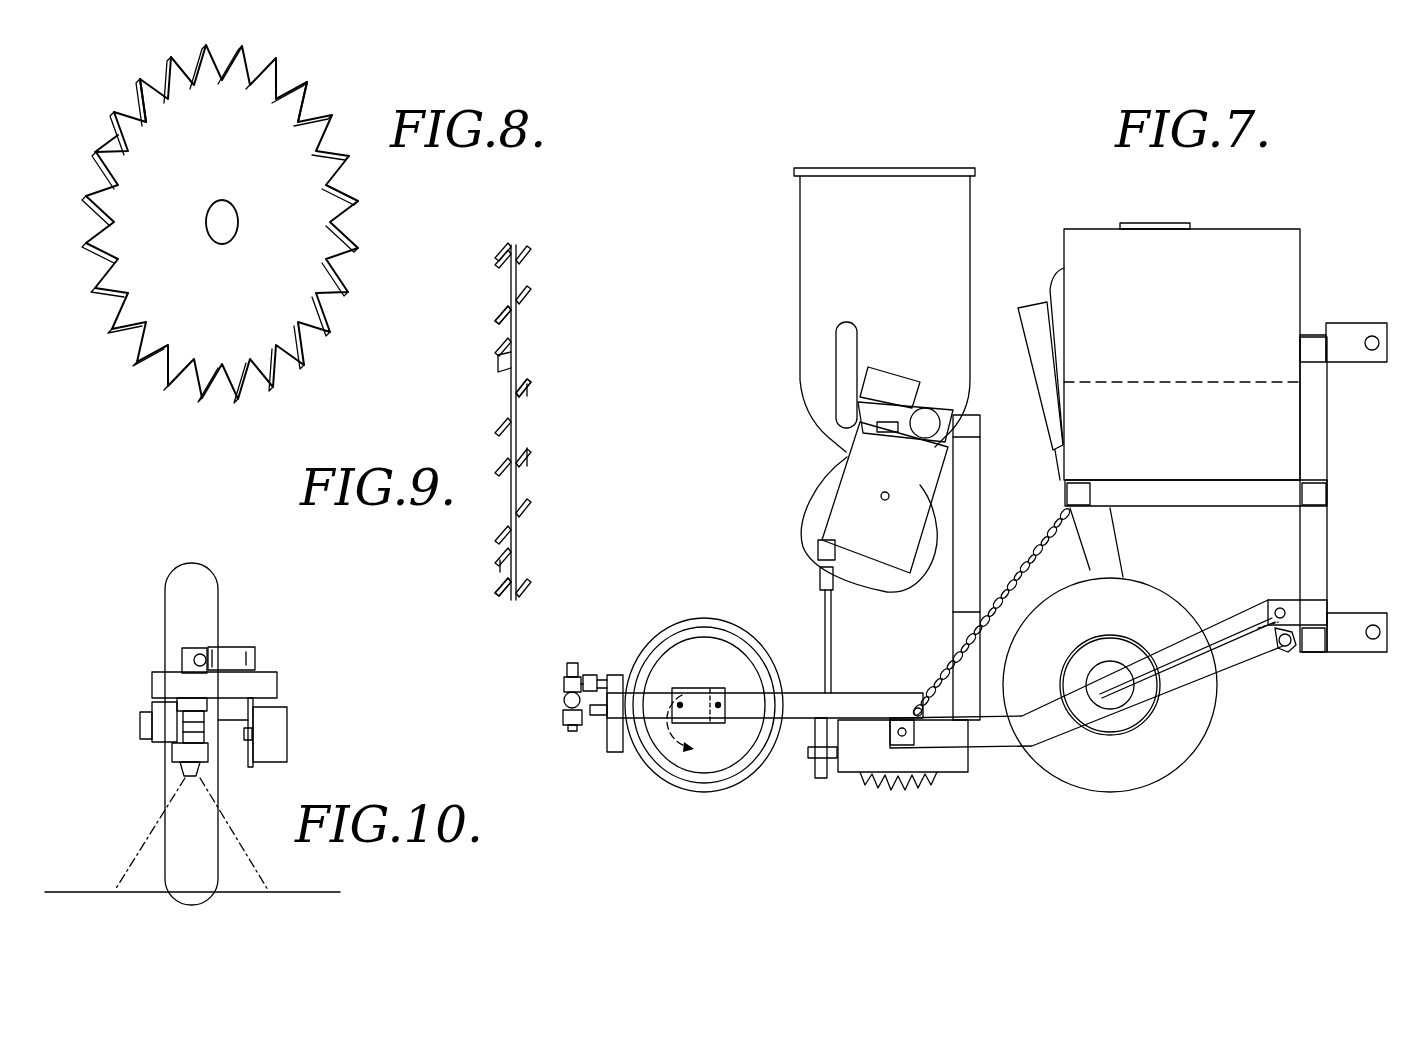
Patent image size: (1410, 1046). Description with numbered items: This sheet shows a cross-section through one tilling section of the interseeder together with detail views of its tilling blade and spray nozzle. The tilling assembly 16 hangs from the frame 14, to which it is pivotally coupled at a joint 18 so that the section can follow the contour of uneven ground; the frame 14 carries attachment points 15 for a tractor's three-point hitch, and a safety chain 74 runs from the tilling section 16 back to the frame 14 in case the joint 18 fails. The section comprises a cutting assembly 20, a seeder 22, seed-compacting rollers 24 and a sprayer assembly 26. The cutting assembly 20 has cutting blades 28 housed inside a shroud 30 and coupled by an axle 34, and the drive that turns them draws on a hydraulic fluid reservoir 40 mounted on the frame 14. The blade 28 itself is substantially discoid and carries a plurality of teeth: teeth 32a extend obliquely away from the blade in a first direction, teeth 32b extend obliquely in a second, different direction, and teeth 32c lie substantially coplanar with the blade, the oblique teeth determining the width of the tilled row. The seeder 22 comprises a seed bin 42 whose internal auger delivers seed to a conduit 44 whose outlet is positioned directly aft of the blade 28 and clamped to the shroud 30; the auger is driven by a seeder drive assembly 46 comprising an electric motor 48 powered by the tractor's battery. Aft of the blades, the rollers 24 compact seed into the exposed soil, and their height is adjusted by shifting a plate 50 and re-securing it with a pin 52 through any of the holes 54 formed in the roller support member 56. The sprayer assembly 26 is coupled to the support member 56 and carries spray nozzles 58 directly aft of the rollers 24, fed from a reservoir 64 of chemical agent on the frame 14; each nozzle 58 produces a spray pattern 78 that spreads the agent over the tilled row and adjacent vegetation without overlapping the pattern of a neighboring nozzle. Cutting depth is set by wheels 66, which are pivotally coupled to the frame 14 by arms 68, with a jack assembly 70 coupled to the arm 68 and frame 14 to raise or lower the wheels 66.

In FIG. 7, the frame 14 is at (1318, 450).
In FIG. 7, the attachment points 15 is at (1355, 330).
In FIG. 10, the tilling assembly 16 is at (298, 745).
In FIG. 7, the tilling assembly 16 is at (1238, 690).
In FIG. 7, the joint 18 is at (1290, 652).
In FIG. 7, the cutting assembly 20 is at (852, 790).
In FIG. 7, the seeder 22 is at (822, 158).
In FIG. 10, the seed-compacting roller 24 is at (210, 604).
In FIG. 7, the seed-compacting roller 24 is at (652, 642).
In FIG. 10, the sprayer assembly 26 is at (172, 658).
In FIG. 7, the sprayer assembly 26 is at (552, 674).
In FIG. 8, the cutting blade 28 is at (262, 288).
In FIG. 9, the cutting blade 28 is at (510, 415).
In FIG. 7, the cutting blade 28 is at (893, 788).
In FIG. 7, the shroud 30 is at (963, 757).
In FIG. 8, the teeth 32a is at (118, 135).
In FIG. 9, the teeth 32a is at (500, 316).
In FIG. 8, the teeth 32b is at (148, 110).
In FIG. 9, the teeth 32b is at (523, 385).
In FIG. 8, the teeth 32c is at (327, 107).
In FIG. 9, the teeth 32c is at (510, 598).
In FIG. 7, the axle 34 is at (890, 722).
In FIG. 7, the hydraulic fluid reservoir 40 is at (1270, 238).
In FIG. 7, the seed bin 42 is at (812, 262).
In FIG. 7, the conduit 44 is at (827, 650).
In FIG. 7, the seeder drive assembly 46 is at (838, 464).
In FIG. 7, the electric motor 48 is at (900, 384).
In FIG. 10, the plate 50 is at (258, 712).
In FIG. 7, the plate 50 is at (710, 690).
In FIG. 10, the pin 52 is at (246, 738).
In FIG. 7, the pin 52 is at (682, 700).
In FIG. 7, the holes 54 is at (696, 729).
In FIG. 7, the roller support member 56 is at (806, 700).
In FIG. 10, the spray nozzle 58 is at (185, 769).
In FIG. 7, the spray nozzle 58 is at (566, 724).
In FIG. 7, the reservoir 64 is at (1055, 292).
In FIG. 7, the wheel 66 is at (1233, 628).
In FIG. 7, the arm 68 is at (1153, 773).
In FIG. 7, the jack assembly 70 is at (1045, 373).
In FIG. 7, the safety chain 74 is at (1060, 538).
In FIG. 10, the spray pattern 78 is at (137, 857).